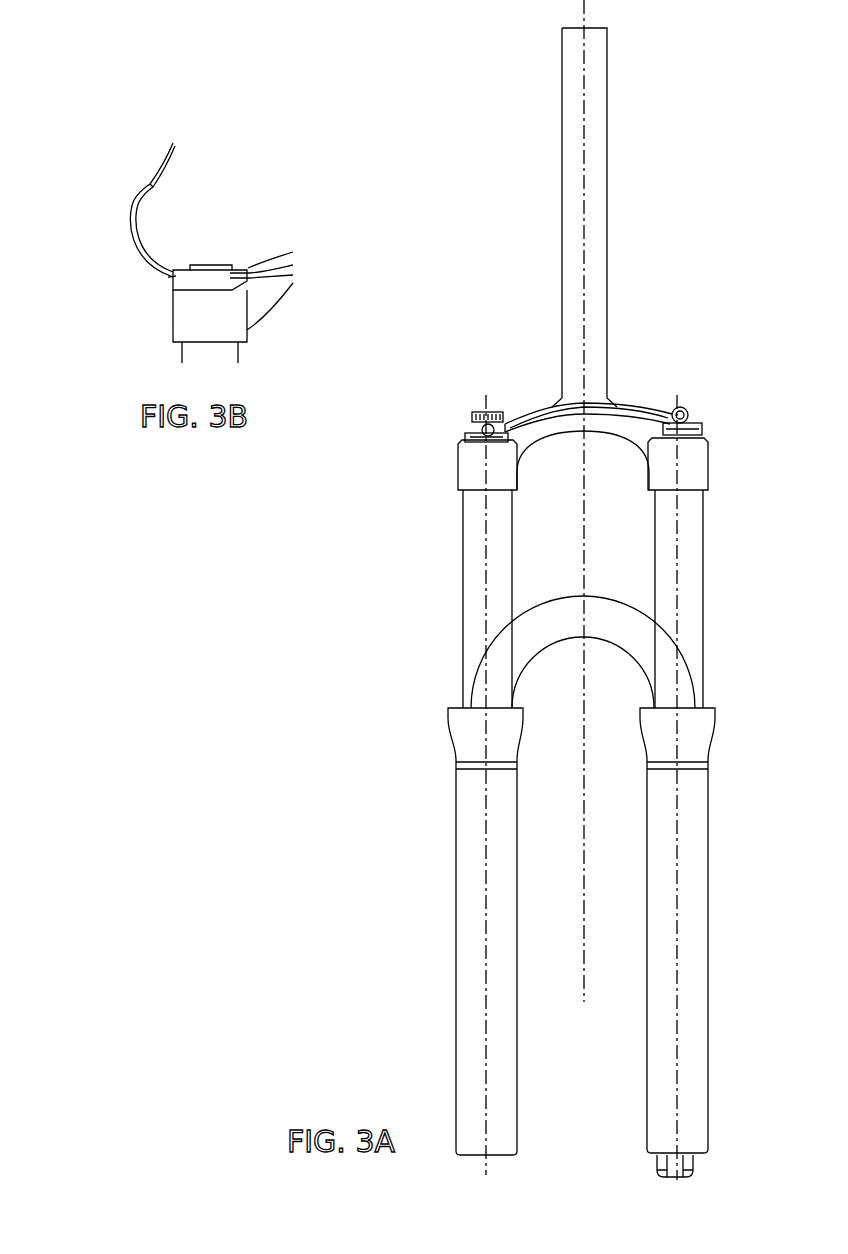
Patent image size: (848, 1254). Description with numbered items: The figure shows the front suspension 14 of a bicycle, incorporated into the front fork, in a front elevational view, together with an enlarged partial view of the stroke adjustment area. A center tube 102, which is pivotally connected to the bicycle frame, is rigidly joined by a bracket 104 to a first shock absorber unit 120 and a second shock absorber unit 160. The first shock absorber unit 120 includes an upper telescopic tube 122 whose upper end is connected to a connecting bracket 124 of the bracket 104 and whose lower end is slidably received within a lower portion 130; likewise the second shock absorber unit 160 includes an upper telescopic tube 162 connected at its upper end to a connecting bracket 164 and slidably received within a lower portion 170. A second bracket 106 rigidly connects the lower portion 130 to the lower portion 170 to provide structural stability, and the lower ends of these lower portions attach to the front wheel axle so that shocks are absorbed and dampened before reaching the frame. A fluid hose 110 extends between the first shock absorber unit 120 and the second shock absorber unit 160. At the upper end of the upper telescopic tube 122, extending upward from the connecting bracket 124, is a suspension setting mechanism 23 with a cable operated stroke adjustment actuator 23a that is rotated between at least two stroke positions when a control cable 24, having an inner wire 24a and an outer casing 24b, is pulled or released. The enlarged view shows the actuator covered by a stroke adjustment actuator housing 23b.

In FIG. 3A, the front suspension 14 is at (583, 590).
In FIG. 3B, the suspension setting mechanism 23 is at (180, 258).
In FIG. 3A, the stroke adjustment actuator 23a is at (480, 410).
In FIG. 3B, the stroke adjustment actuator housing 23b is at (175, 280).
In FIG. 3B, the control cable 24 is at (99, 206).
In FIG. 3B, the inner wire 24a is at (163, 165).
In FIG. 3B, the outer casing 24b is at (146, 192).
In FIG. 3A, the center tube 102 is at (563, 146).
In FIG. 3A, the bracket (first connector) 104 is at (592, 438).
In FIG. 3A, the bracket (second connector) 106 is at (567, 603).
In FIG. 3A, the fluid hose 110 is at (628, 402).
In FIG. 3A, the first shock absorber unit 120 is at (438, 785).
In FIG. 3A, the upper telescopic tube 122 is at (463, 517).
In FIG. 3B, the connecting bracket 124 is at (173, 324).
In FIG. 3A, the connecting bracket 124 is at (458, 458).
In FIG. 3A, the lower portion 130 is at (457, 867).
In FIG. 3A, the second shock absorber unit 160 is at (726, 787).
In FIG. 3A, the upper telescopic tube 162 is at (700, 528).
In FIG. 3A, the connecting bracket 164 is at (708, 453).
In FIG. 3A, the lower portion 170 is at (707, 867).